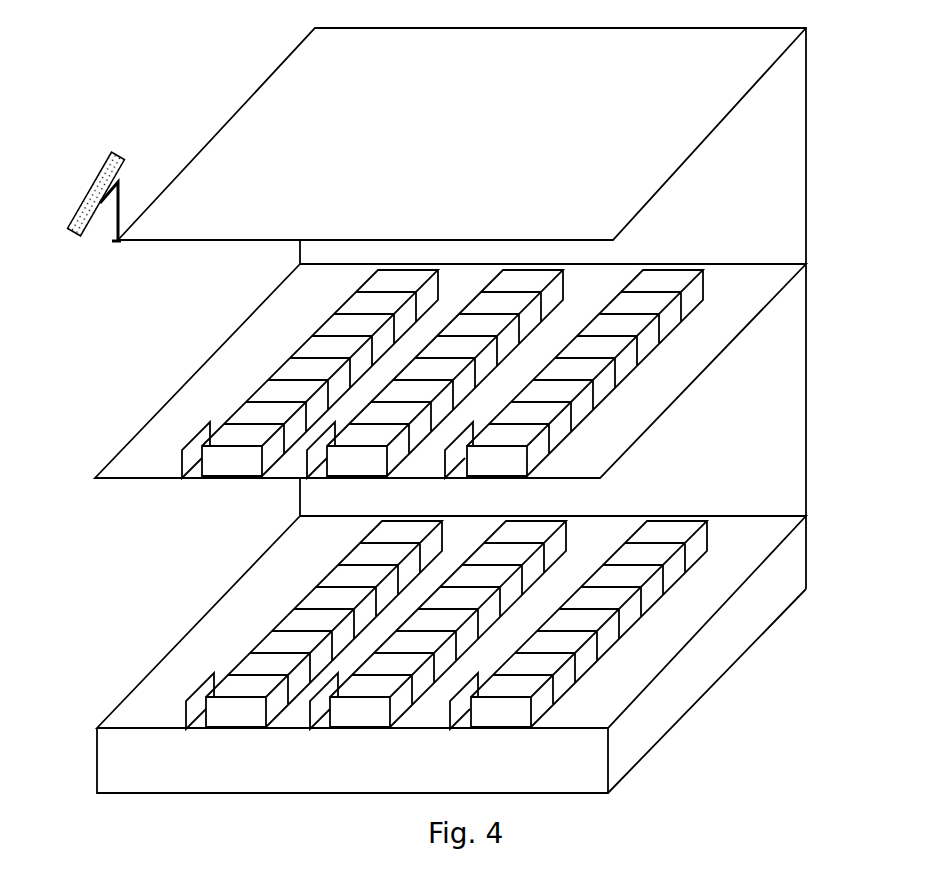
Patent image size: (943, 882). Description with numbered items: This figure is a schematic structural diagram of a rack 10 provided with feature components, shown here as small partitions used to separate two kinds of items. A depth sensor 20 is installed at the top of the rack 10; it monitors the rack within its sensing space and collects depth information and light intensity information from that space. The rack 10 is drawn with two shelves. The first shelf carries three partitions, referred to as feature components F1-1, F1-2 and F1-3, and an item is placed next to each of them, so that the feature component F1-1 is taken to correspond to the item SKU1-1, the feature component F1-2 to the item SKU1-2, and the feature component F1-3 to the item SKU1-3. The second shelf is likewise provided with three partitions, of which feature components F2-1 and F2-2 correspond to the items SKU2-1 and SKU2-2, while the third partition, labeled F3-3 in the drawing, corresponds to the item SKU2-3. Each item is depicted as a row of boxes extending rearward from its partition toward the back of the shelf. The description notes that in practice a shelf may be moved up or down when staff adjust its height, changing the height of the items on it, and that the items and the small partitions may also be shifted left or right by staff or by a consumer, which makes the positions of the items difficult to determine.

The rack 10 is at (806, 173).
The depth sensor 20 is at (92, 190).
The feature component F1-1 is at (190, 454).
The feature component F1-2 is at (314, 459).
The feature component F1-3 is at (453, 459).
The feature component F2-1 is at (193, 708).
The feature component F2-2 is at (318, 708).
The second shelf third facing divider F3-3 is at (455, 712).
The item SKU1-1 is at (320, 373).
The item SKU1-2 is at (445, 373).
The item SKU1-3 is at (585, 373).
The item SKU2-1 is at (324, 624).
The item SKU2-2 is at (448, 624).
The item SKU2-3 is at (589, 624).